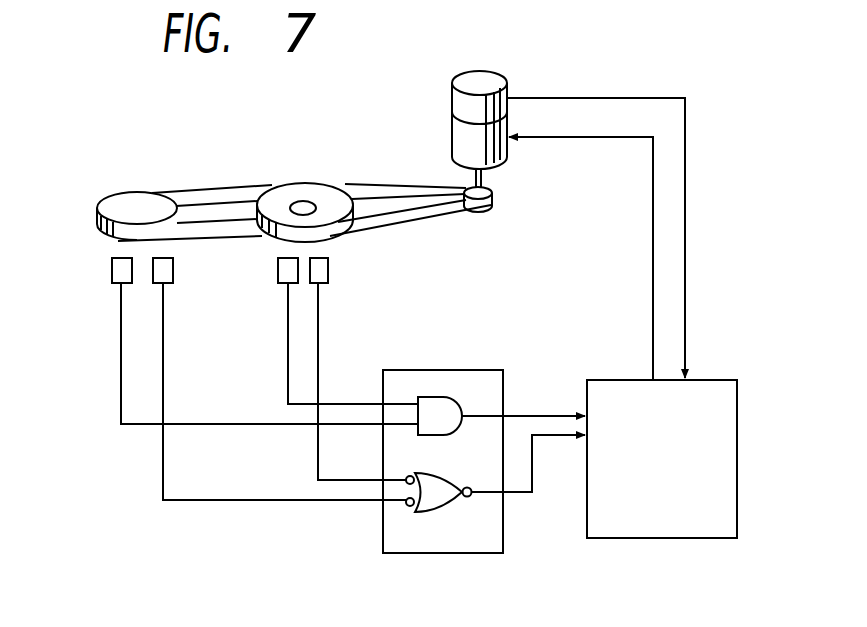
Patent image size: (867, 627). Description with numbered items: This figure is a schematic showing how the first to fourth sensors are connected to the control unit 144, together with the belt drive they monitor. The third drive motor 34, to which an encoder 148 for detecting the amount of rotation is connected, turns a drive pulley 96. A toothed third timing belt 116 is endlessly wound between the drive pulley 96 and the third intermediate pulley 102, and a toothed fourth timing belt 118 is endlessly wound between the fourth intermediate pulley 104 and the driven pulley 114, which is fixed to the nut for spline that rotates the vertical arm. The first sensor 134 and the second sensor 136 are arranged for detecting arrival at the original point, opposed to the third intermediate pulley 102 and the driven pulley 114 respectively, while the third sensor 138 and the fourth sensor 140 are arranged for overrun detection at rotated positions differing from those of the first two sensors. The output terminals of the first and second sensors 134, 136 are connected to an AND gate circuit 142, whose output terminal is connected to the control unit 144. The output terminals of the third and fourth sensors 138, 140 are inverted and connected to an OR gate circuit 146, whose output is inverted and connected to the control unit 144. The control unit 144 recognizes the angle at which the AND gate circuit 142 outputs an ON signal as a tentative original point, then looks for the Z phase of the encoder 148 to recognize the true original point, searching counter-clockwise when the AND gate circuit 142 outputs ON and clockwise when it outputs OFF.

The driven pulley 114 is at (130, 199).
The fourth timing belt 118 is at (210, 198).
The third intermediate pulley 102 is at (310, 185).
The fourth intermediate pulley 104 is at (318, 211).
The third timing belt 116 is at (384, 189).
The drive pulley 96 is at (478, 208).
The third drive motor 34 is at (479, 109).
The encoder 148 is at (490, 80).
The second sensor 136 is at (112, 272).
The fourth sensor 140 is at (173, 272).
The first sensor 134 is at (278, 281).
The third sensor 138 is at (328, 272).
The AND gate circuit 142 is at (438, 397).
The OR gate circuit 146 is at (433, 440).
The control unit 144 is at (713, 380).